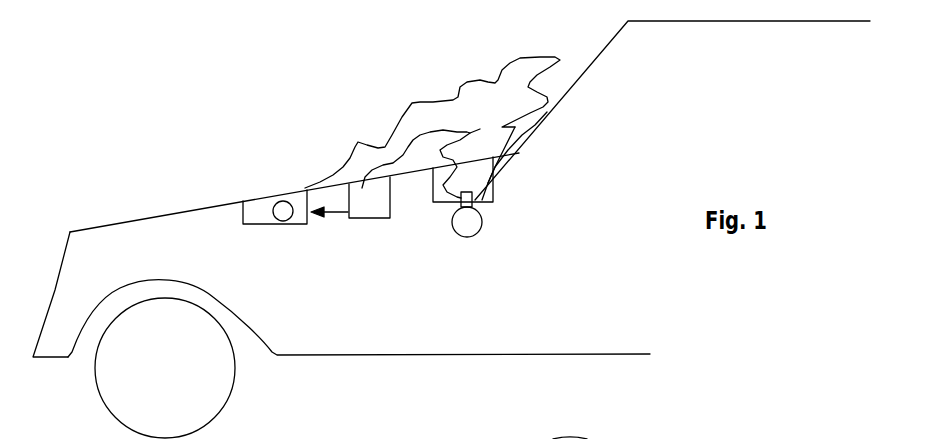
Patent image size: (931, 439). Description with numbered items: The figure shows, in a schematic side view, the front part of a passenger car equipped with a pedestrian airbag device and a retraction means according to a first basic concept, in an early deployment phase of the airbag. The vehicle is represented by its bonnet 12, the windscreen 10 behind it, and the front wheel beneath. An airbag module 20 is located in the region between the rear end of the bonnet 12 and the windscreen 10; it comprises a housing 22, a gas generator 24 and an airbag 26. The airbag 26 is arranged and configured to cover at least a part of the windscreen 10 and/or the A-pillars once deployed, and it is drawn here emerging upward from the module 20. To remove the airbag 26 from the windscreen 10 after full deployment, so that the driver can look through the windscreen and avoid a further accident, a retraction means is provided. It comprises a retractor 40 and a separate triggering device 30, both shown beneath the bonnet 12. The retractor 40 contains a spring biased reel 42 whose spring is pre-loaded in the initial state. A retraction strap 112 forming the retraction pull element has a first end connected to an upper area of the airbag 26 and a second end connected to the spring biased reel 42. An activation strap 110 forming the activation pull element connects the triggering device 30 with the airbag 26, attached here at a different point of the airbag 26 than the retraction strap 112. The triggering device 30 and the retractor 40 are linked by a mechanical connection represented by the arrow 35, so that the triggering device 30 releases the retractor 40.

The windscreen 10 is at (589, 68).
The bonnet 12 is at (200, 209).
The airbag module 20 is at (488, 183).
The housing 22 is at (493, 192).
The gas generator 24 is at (472, 218).
The airbag 26 is at (548, 103).
The triggering device 30 is at (372, 200).
The arrow 35 is at (340, 214).
The retractor 40 is at (258, 215).
The spring biased reel 42 is at (286, 213).
The activation strap 110 is at (413, 140).
The retraction strap 112 is at (420, 102).